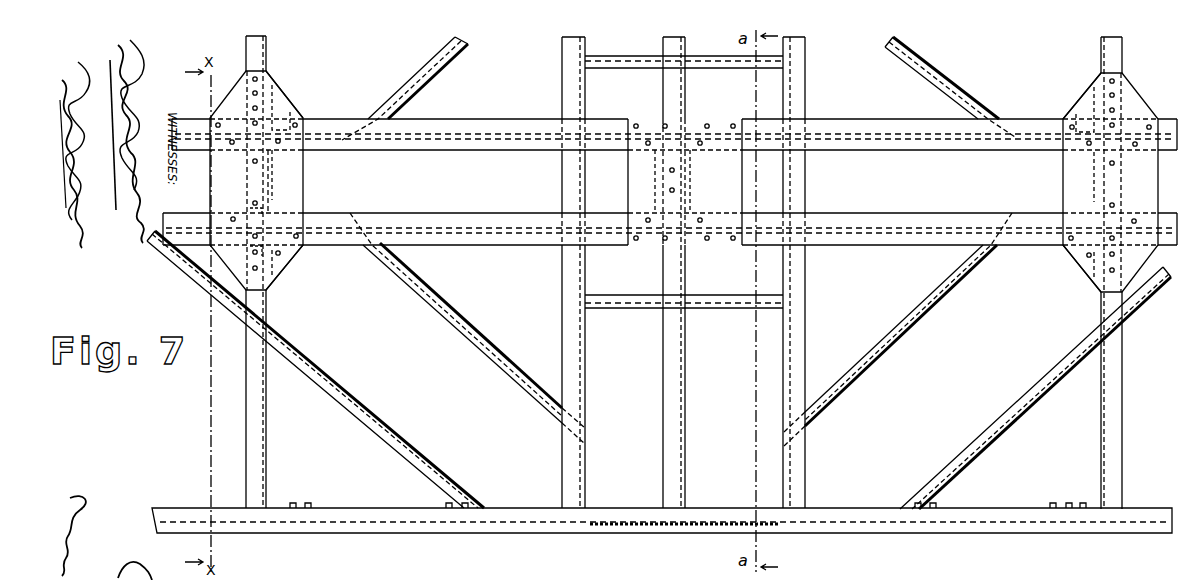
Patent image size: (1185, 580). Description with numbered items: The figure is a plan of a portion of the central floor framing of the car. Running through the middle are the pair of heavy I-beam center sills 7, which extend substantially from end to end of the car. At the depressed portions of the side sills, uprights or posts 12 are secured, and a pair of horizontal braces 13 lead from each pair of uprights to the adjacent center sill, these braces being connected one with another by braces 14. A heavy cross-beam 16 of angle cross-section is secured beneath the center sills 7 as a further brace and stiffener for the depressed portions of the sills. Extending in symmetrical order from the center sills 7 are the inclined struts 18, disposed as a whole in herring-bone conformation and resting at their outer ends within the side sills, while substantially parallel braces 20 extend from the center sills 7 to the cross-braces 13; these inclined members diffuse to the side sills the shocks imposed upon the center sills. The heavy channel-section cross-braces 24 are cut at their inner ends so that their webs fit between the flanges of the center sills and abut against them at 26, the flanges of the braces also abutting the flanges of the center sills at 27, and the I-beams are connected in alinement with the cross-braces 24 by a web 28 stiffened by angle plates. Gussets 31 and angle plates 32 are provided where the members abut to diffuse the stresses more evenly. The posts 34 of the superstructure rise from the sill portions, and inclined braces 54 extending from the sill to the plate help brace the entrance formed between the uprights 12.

The center sill 7 is at (887, 120).
The upright 12 is at (568, 533).
The horizontal brace 13 is at (565, 353).
The brace 14 is at (723, 66).
The cross-beam 16 is at (678, 103).
The inclined strut 18 is at (349, 392).
The brace 20 is at (428, 77).
The cross-brace 24 is at (258, 57).
The abutment 26 is at (253, 250).
The flange abutment 27 is at (254, 212).
The web 28 is at (268, 178).
The gusset 31 is at (303, 187).
The angle plate 32 is at (282, 94).
The post 34 is at (304, 533).
The inclined brace 54 is at (455, 534).